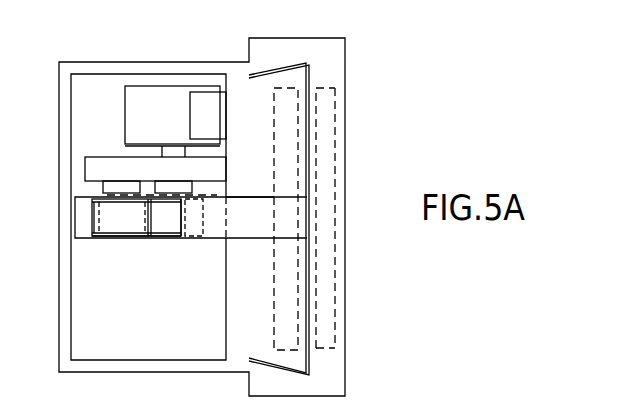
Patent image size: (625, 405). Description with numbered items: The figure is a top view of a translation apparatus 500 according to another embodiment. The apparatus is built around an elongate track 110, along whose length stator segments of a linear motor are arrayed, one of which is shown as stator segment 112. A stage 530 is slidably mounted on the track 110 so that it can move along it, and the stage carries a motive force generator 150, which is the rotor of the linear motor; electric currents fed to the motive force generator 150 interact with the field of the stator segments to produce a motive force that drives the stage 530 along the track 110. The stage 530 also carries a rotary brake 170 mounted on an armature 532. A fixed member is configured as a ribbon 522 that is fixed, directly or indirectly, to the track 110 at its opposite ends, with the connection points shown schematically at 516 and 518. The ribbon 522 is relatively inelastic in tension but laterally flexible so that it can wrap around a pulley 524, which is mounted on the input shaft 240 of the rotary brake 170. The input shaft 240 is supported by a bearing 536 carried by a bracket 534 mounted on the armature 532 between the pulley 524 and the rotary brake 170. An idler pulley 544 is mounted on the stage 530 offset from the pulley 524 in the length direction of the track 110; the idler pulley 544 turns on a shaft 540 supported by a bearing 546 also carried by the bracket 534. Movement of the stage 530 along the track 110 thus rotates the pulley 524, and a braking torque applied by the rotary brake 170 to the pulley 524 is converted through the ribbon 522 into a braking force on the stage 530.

The translation apparatus 500 is at (193, 46).
The stage 530 is at (88, 61).
The armature 532 is at (226, 337).
The rotary brake 170 is at (175, 115).
The input shaft 240 is at (162, 150).
The bracket 534 is at (155, 169).
The bearing 546 is at (106, 186).
The bearing 536 is at (205, 192).
The shaft 540 is at (75, 198).
The connection point 518 is at (86, 228).
The ribbon 522 is at (95, 240).
The idler pulley 544 is at (121, 238).
The pulley 524 is at (173, 240).
The connection point 516 is at (250, 222).
The motive force generator 150 is at (298, 88).
The track 110 is at (338, 190).
The stator segment 112 is at (338, 215).